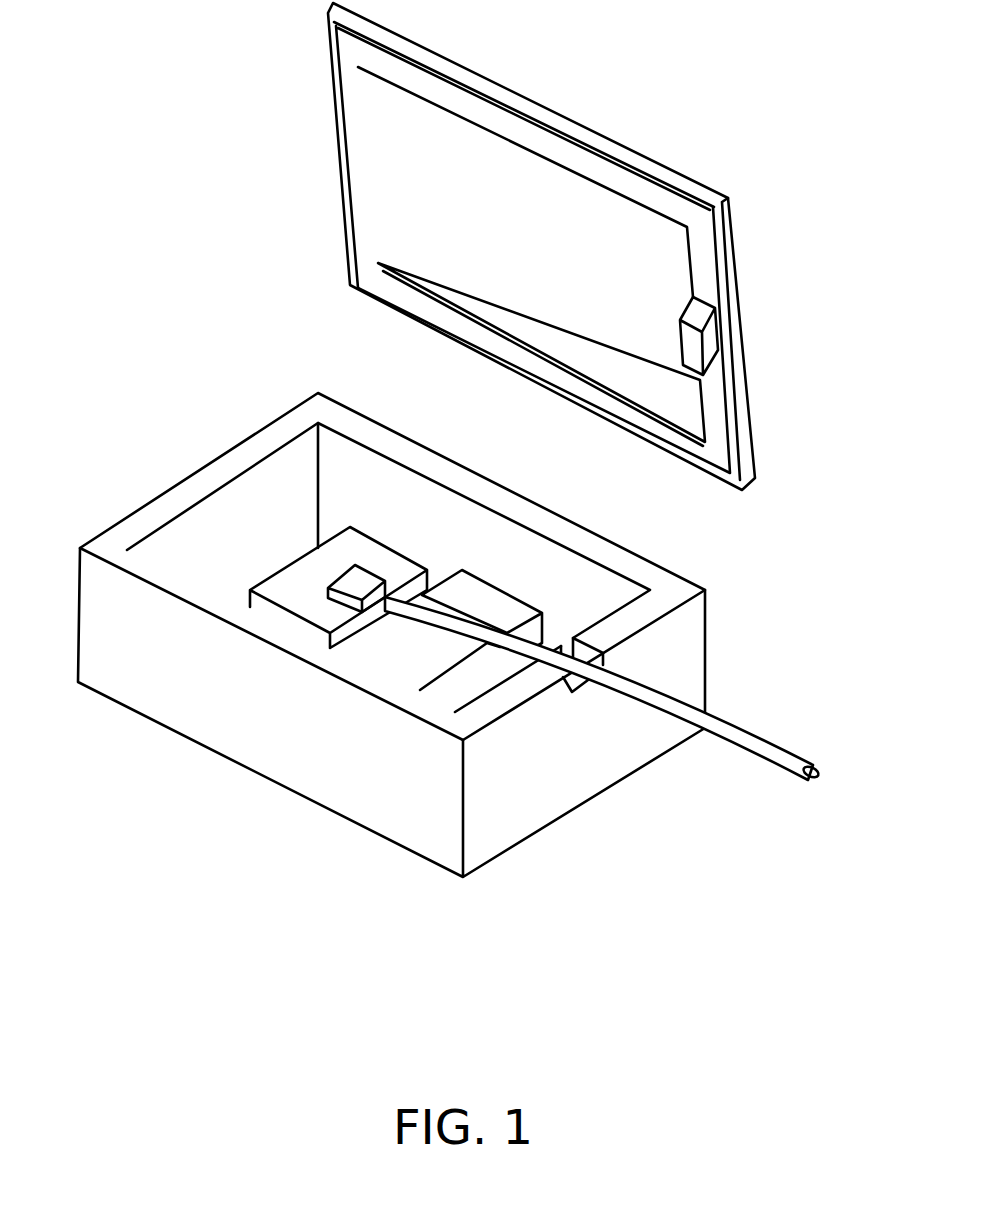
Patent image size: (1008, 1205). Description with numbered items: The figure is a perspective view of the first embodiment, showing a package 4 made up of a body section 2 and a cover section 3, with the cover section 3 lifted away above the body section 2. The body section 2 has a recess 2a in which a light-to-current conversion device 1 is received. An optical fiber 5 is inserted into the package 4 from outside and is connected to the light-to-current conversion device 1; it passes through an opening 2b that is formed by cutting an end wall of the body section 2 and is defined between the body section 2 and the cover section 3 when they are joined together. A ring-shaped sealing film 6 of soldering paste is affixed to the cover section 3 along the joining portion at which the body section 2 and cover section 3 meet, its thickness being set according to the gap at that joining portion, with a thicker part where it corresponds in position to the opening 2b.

The light-to-current conversion device 1 is at (352, 583).
The body section 2 is at (145, 690).
The recess 2a is at (415, 500).
The opening 2b is at (583, 657).
The cover section 3 is at (680, 175).
The package 4 is at (459, 471).
The optical fiber 5 is at (784, 755).
The sealing film 6 is at (347, 51).